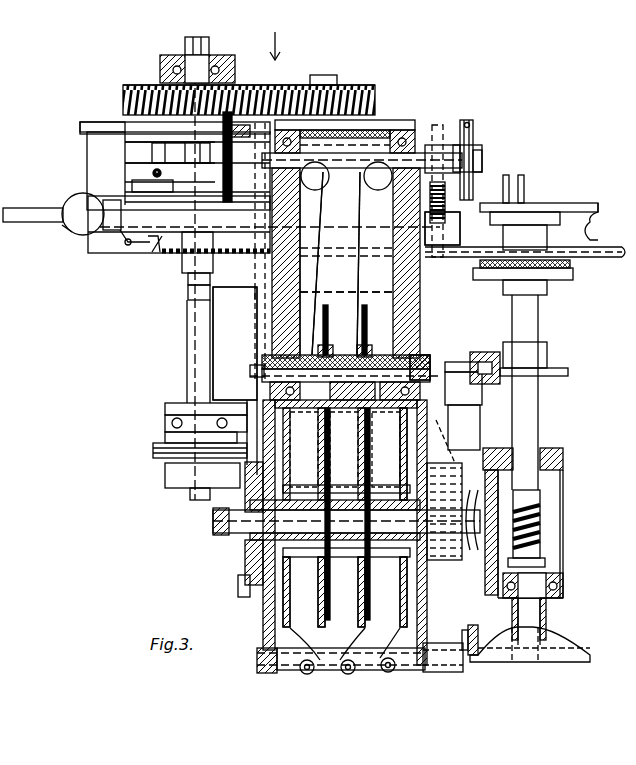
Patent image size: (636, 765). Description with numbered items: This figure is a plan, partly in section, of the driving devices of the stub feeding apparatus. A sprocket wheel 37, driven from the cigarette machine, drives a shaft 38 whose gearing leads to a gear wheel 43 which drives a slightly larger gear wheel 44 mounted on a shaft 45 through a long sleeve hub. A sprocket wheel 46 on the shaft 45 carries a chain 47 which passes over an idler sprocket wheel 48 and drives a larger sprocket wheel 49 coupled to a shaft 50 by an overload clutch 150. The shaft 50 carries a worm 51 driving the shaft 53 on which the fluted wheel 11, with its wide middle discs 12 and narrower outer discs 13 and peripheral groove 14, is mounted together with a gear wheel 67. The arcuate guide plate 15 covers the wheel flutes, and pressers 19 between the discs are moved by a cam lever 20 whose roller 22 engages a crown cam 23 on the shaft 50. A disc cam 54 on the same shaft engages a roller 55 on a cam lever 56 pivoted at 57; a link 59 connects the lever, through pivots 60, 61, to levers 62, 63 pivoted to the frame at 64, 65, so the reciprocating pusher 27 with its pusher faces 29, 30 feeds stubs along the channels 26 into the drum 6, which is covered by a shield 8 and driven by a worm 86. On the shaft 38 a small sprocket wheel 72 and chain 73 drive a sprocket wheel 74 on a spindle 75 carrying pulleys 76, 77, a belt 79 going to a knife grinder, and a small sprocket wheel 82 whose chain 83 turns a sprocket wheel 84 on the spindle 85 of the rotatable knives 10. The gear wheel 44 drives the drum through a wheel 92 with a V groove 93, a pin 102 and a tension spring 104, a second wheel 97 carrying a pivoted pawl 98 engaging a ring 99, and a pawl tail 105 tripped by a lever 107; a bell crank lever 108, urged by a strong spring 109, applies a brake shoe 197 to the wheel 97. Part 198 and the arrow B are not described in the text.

The pin 102 is at (198, 37).
The tension spring 104 is at (165, 64).
The gear wheel 44 is at (150, 90).
The gear wheel 43 is at (366, 85).
The pawl tail 105 is at (312, 82).
The round belt 79 is at (258, 123).
The V groove 93 is at (135, 128).
The disc or wheel 92 is at (140, 142).
The pivoted pawl 98 is at (150, 160).
The pin 198 is at (152, 173).
The ring 99 is at (160, 183).
The pulley 77 is at (200, 148).
The lever 107 is at (42, 208).
The bell crank lever 108 is at (72, 196).
The brake shoe 197 is at (88, 232).
The second wheel 97 is at (126, 245).
The strong spring 109 is at (152, 250).
The sprocket wheel 46 is at (165, 255).
The idler sprocket wheel 48 is at (185, 270).
The shaft 45 is at (186, 312).
The worm 86 is at (155, 452).
The small sprocket wheel 82 is at (322, 172).
The pivot 65 is at (312, 182).
The pivot 64 is at (365, 182).
The chain 47 is at (330, 263).
The lever 63 is at (312, 285).
The lever 62 is at (362, 284).
The pivot 61 is at (330, 308).
The rotatable knives 10 is at (362, 338).
The chain 83 is at (256, 300).
The sprocket wheel 84 is at (258, 340).
The spindle 85 is at (252, 376).
The pivot 60 is at (420, 340).
The pivot 57 is at (462, 362).
The cam lever 56 is at (465, 362).
The link 59 is at (450, 385).
The roller 55 is at (490, 383).
The drum 6 is at (443, 431).
The shield 8 is at (478, 462).
The shaft 53 is at (480, 522).
The worm 51 is at (540, 505).
The shaft 50 is at (540, 386).
The disc cam 54 is at (560, 368).
The overload clutch 150 is at (565, 280).
The sprocket wheel 74 is at (434, 124).
The pulley 76 is at (466, 122).
The spindle 75 is at (478, 150).
The chain 73 is at (445, 188).
The small sprocket wheel 72 is at (448, 215).
The sprocket wheel 37 is at (524, 185).
The shaft 38 is at (575, 212).
The sprocket wheel 49 is at (610, 247).
The arcuate guide plate or shield 15 is at (324, 449).
The reciprocating pusher 27 is at (196, 548).
The grooves or channels 26 is at (393, 454).
The pusher face 30 is at (262, 545).
The gear wheel 67 is at (238, 586).
The pusher face 29 is at (306, 592).
The peripheral groove 14 is at (337, 592).
The middle discs 12 is at (352, 592).
The outer discs 13 is at (405, 598).
The fluted wheel 11 is at (314, 670).
The fingers or pressers 19 is at (360, 668).
The cam lever 20 is at (470, 666).
The roller 22 is at (473, 625).
The crown cam 23 is at (560, 648).
The direction arrow B is at (281, 45).